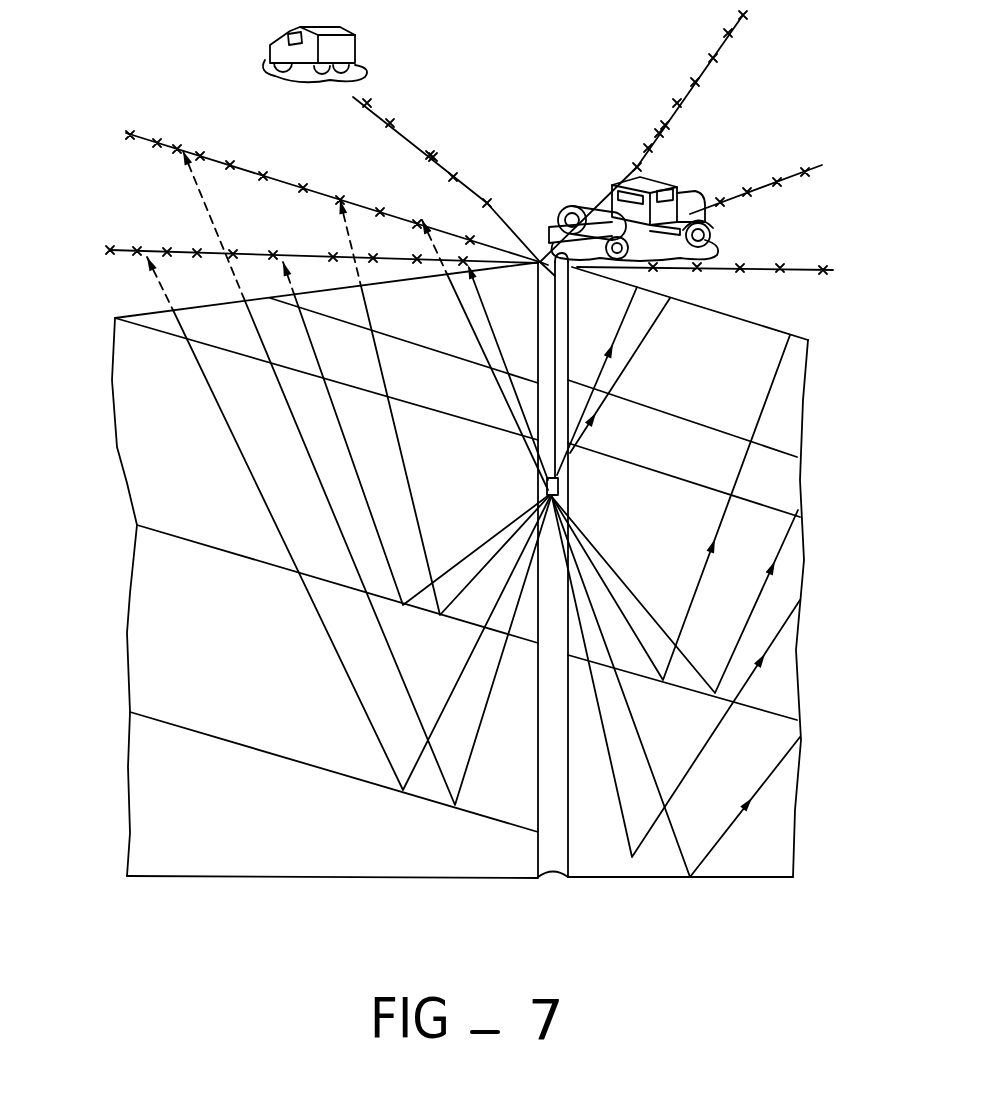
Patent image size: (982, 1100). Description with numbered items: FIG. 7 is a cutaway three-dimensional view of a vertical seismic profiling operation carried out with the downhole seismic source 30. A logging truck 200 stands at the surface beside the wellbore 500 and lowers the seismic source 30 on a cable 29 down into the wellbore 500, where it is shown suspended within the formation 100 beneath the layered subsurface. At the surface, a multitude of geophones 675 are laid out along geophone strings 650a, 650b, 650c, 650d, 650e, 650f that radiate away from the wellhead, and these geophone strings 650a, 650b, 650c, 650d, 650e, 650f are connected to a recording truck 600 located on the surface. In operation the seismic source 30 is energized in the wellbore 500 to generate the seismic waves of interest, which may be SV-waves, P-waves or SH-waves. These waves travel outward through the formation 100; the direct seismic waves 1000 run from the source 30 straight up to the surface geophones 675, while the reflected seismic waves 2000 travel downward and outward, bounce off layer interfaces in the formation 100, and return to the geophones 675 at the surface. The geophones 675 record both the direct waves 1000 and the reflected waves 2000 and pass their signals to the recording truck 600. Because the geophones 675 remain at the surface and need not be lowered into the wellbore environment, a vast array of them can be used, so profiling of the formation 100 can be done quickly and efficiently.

The cable 29 is at (540, 258).
The downhole seismic source 30 is at (547, 487).
The earth formation 100 is at (725, 392).
The logging truck 200 is at (660, 178).
The wellbore 500 is at (567, 337).
The recording truck 600 is at (317, 48).
The geophone string 650a is at (257, 257).
The geophone string 650b is at (287, 182).
The geophone string 650c is at (395, 127).
The geophone string 650d is at (650, 63).
The surface receiver line e 650e is at (790, 175).
The surface receiver line f 650f is at (795, 268).
The surface geophones 675 is at (433, 157).
The direct seismic waves 1000 is at (515, 389).
The reflected seismic waves 2000 is at (393, 672).